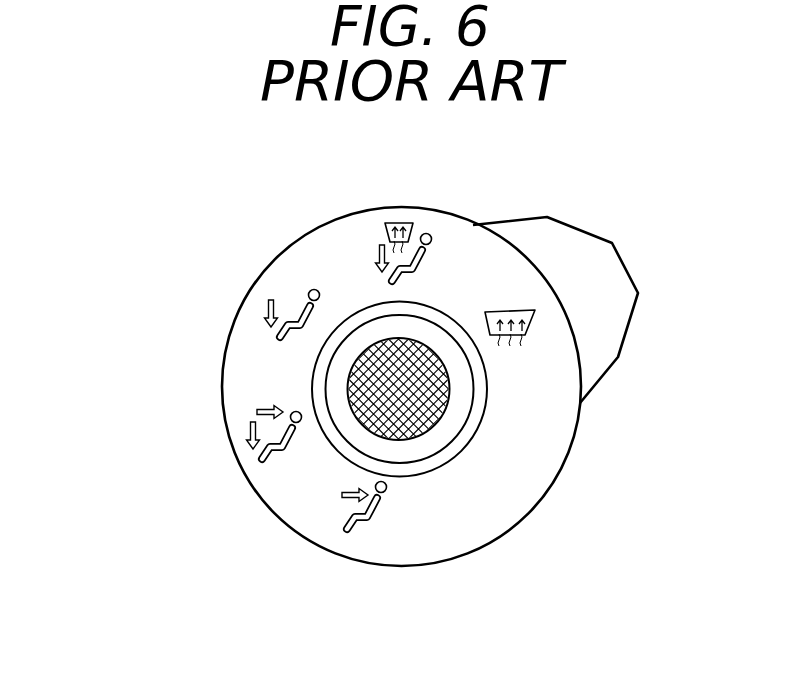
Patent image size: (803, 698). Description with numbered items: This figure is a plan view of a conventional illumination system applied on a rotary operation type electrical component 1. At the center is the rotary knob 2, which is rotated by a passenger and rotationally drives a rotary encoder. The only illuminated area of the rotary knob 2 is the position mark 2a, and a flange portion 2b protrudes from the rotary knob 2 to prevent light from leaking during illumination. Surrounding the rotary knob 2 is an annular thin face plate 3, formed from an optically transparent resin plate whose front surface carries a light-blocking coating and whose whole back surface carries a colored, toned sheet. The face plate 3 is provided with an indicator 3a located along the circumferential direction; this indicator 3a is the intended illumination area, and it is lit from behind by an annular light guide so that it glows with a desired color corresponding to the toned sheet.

The rotary operation type electrical component 1 is at (240, 262).
The rotary knob 2 is at (477, 410).
The position mark 2a is at (372, 425).
The flange portion 2b is at (422, 447).
The face plate 3 is at (242, 357).
The indicator 3a is at (377, 247).